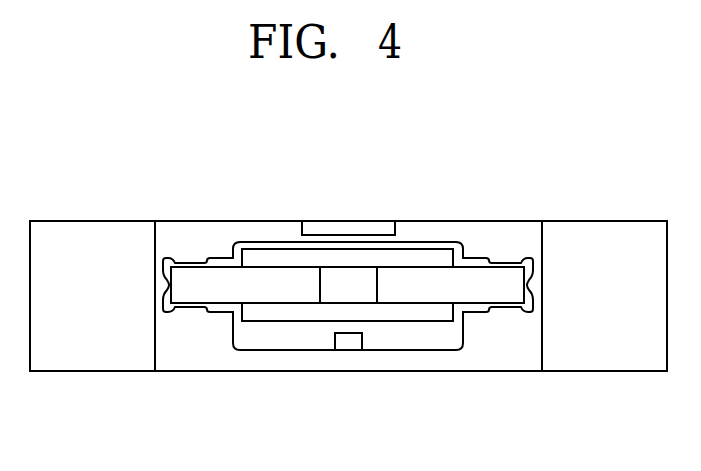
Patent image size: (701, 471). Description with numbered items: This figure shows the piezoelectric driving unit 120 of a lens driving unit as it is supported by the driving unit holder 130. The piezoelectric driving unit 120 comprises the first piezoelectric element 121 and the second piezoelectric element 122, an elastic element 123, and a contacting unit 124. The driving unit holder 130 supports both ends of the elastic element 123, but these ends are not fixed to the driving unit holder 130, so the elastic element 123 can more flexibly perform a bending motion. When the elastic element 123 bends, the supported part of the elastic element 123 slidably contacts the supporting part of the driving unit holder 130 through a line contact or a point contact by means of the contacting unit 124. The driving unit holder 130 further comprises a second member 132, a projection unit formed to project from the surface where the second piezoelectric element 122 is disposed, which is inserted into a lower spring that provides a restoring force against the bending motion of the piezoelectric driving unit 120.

The piezoelectric driving unit 120 is at (263, 247).
The first piezoelectric element 121 is at (348, 260).
The second piezoelectric element 122 is at (403, 310).
The elastic element 123 is at (291, 283).
The contacting unit 124 is at (333, 292).
The driving unit holder 130 is at (485, 220).
The second member 132 is at (348, 340).